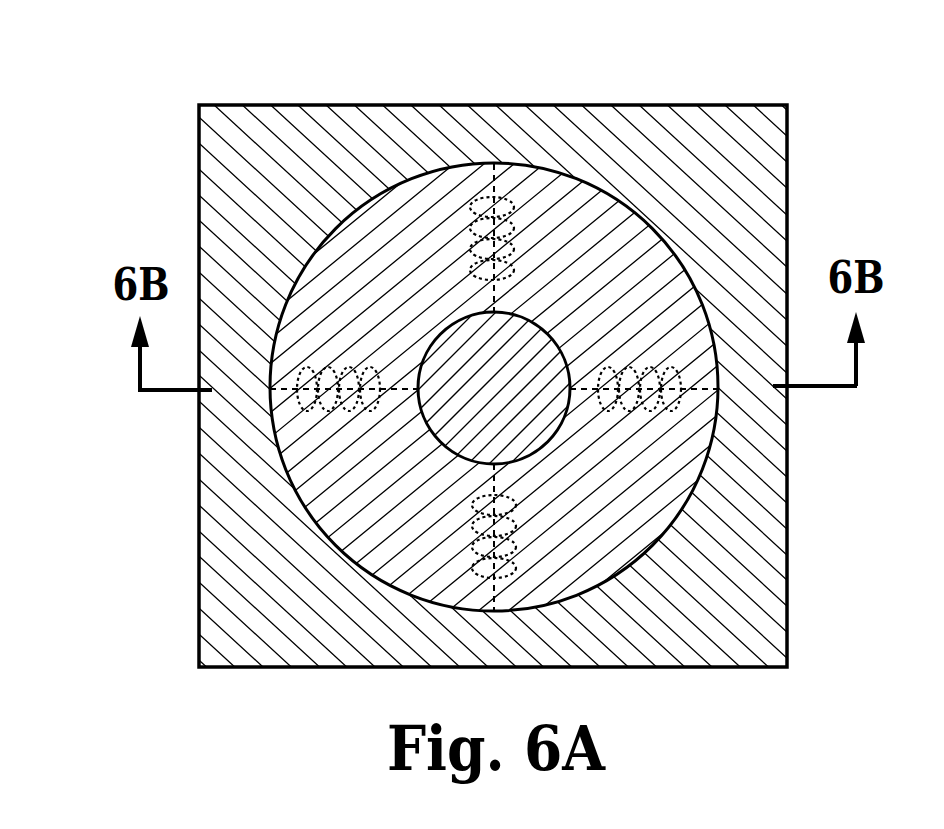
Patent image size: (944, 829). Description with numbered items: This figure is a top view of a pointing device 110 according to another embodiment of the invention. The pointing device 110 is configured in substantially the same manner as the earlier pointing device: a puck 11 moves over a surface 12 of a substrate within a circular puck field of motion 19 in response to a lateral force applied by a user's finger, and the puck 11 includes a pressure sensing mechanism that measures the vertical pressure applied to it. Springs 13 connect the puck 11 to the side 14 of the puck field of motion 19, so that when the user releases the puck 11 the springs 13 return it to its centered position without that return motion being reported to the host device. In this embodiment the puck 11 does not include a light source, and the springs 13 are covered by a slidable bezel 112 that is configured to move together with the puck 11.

The pointing device 110 is at (130, 98).
The slidable bezel 112 is at (601, 214).
The puck field of motion 19 is at (640, 257).
The puck 11 is at (536, 345).
The surface 12 is at (616, 537).
The springs 13 is at (651, 410).
The side 14 is at (770, 542).